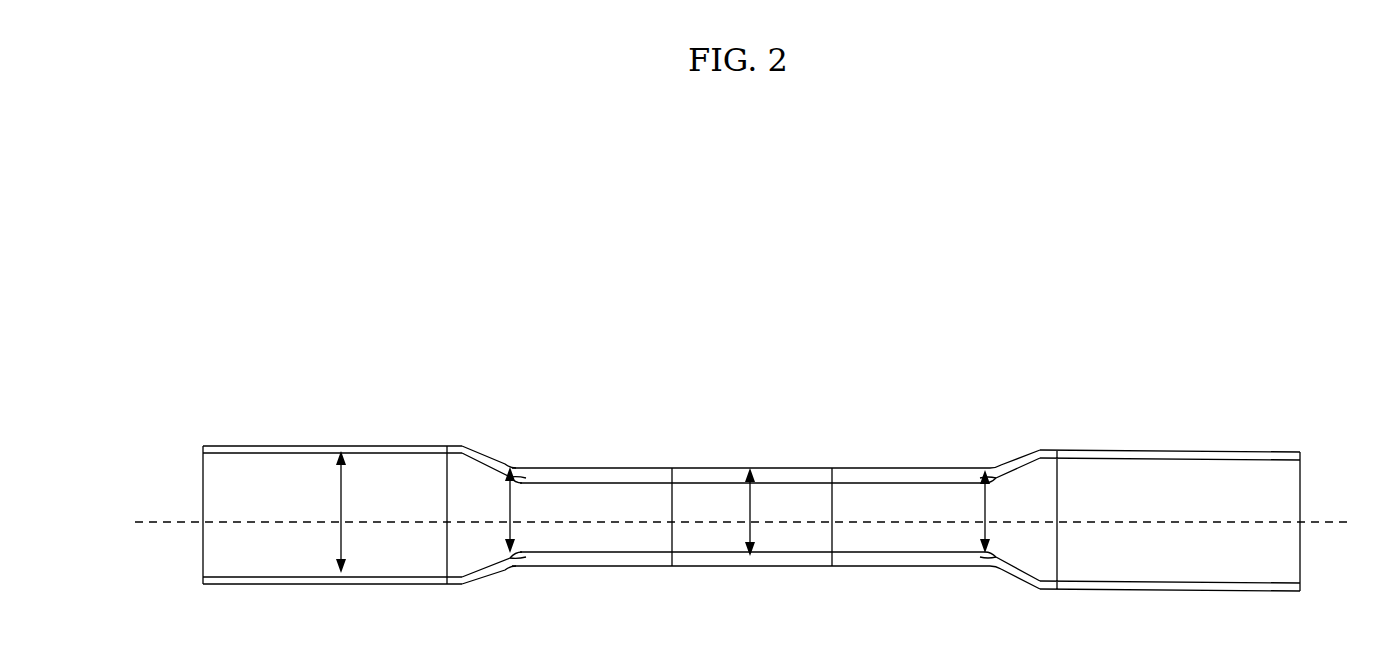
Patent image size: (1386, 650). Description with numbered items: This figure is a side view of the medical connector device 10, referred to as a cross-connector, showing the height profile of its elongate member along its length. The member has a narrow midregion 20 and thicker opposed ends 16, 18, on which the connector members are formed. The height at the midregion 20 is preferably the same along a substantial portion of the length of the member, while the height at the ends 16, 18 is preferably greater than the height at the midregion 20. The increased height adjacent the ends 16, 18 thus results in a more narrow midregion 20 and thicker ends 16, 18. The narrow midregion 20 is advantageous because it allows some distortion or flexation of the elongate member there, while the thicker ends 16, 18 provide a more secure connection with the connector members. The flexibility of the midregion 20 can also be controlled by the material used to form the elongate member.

The medical connector device 10 is at (308, 219).
The first end 16 is at (507, 445).
The second end 18 is at (985, 445).
The midregion 20 is at (748, 462).